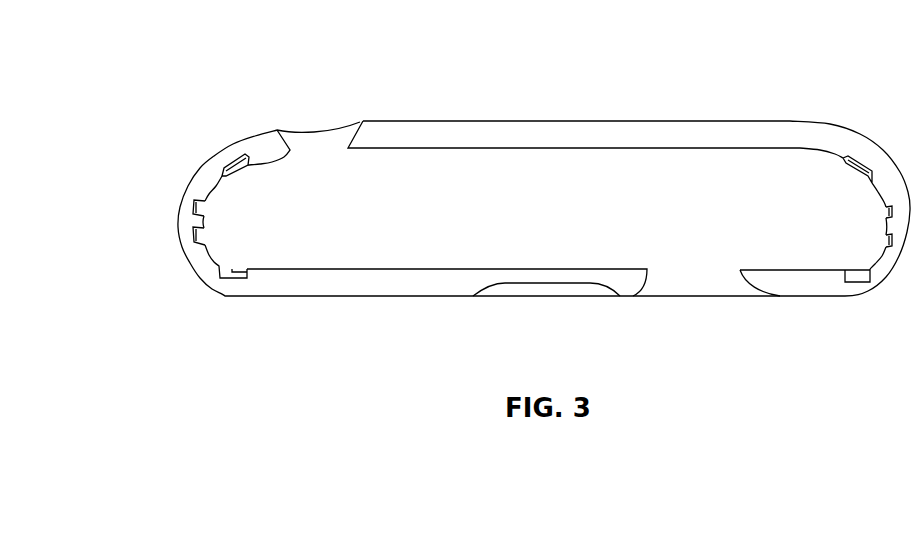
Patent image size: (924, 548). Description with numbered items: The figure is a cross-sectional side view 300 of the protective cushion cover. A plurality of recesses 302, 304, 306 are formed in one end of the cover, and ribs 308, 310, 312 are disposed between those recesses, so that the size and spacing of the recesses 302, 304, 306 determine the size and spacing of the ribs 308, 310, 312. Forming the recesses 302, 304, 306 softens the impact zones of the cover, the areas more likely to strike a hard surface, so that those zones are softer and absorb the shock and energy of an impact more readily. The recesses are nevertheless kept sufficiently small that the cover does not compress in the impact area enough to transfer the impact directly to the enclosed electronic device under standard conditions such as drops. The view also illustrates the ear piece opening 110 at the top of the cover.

The ear piece opening 110 is at (323, 108).
The cross-sectional side view 300 is at (605, 70).
The recess 302 is at (227, 168).
The recess 304 is at (193, 205).
The recess 306 is at (193, 247).
The rib 308 is at (210, 185).
The rib 310 is at (193, 223).
The rib 312 is at (205, 258).